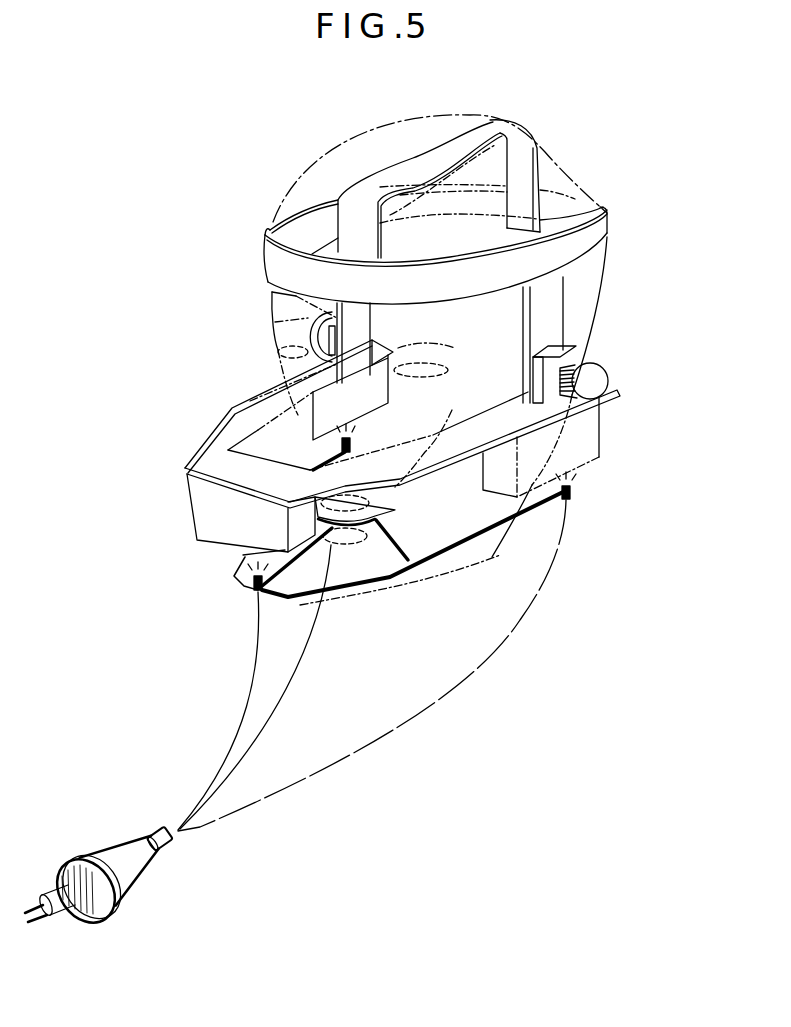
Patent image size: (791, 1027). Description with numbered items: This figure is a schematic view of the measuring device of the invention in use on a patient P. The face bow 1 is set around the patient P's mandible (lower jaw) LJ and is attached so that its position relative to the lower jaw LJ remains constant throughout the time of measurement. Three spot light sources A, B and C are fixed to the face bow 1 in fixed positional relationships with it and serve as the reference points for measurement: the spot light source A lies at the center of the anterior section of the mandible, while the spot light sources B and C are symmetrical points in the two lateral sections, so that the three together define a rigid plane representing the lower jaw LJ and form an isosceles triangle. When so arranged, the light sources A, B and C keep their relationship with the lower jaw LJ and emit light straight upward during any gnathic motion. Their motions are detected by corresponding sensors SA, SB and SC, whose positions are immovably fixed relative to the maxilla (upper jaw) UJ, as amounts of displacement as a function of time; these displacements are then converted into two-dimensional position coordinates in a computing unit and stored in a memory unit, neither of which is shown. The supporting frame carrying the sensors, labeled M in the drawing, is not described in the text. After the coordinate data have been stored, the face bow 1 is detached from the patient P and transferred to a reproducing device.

The face bow 1 is at (453, 552).
The spot light source A is at (252, 590).
The spot light source B is at (353, 442).
The spot light source C is at (572, 490).
The mounting frame M is at (210, 435).
The patient P is at (307, 308).
The sensor SA is at (200, 500).
The sensor SB is at (285, 425).
The sensor SC is at (592, 434).
The maxilla (upper jaw) UJ is at (400, 493).
The mandible (lower jaw) LJ is at (352, 512).